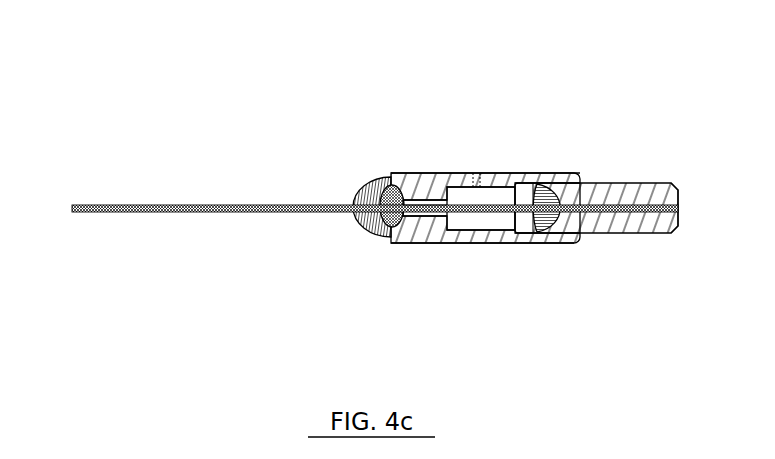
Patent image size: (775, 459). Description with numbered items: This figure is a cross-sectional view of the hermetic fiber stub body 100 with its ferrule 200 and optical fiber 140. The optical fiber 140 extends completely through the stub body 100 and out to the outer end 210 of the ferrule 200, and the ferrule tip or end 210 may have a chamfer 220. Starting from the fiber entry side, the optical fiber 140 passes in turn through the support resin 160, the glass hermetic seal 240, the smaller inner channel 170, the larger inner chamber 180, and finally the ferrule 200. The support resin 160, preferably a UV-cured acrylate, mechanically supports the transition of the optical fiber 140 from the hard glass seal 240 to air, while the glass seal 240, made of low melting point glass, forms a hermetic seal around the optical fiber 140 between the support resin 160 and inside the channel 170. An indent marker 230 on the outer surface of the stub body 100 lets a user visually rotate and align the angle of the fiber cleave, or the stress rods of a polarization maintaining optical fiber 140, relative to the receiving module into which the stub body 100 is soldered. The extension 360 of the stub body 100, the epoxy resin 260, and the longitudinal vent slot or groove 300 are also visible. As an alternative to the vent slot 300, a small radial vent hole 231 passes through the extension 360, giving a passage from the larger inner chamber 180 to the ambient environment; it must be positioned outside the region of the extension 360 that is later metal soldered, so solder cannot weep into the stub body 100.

The stub body 100 is at (498, 246).
The optical fiber 140 is at (166, 210).
The support resin 160 is at (368, 241).
The smaller inner channel 170 is at (422, 204).
The larger inner chamber 180 is at (470, 218).
The ferrule 200 is at (629, 190).
The outer end of the ferrule 210 is at (673, 187).
The chamfer 220 is at (681, 238).
The indent marker 230 is at (413, 161).
The vent hole 231 is at (474, 168).
The glass hermetic seal 240 is at (400, 217).
The epoxy resin 260 is at (538, 224).
The vent slot 300 is at (557, 182).
The extension of the stub body 360 is at (442, 173).